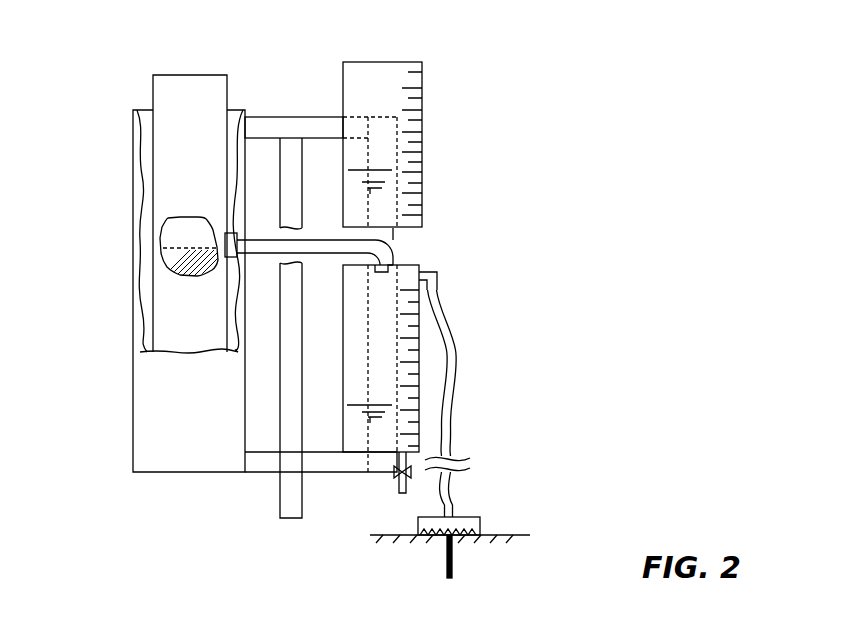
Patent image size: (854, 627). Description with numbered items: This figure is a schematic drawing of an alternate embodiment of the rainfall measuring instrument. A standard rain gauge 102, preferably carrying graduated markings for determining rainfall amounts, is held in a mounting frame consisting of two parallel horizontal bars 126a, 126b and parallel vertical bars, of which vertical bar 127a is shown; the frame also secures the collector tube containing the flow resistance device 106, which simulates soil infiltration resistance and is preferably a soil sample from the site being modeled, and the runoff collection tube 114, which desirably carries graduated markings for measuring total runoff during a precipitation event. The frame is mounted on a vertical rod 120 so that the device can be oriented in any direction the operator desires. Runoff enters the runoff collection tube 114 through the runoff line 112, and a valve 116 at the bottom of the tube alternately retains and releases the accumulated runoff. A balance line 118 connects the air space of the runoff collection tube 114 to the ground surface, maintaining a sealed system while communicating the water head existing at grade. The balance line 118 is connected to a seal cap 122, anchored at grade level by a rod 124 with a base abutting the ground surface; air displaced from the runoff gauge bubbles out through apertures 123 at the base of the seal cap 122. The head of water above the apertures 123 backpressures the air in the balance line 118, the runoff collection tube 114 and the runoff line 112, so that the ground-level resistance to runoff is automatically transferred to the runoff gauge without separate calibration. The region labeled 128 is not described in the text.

The standard rain gauge 102 is at (422, 68).
The flow resistance device 106 is at (168, 247).
The runoff line 112 is at (375, 243).
The runoff collection tube 114 is at (440, 347).
The valve 116 is at (400, 488).
The balance line 118 is at (458, 388).
The vertical rod 120 is at (290, 520).
The seal cap 122 is at (468, 513).
The apertures 123 is at (420, 535).
The rod 124 is at (452, 560).
The horizontal bar 126a is at (333, 115).
The horizontal bar 126b is at (272, 473).
The vertical bar 127a is at (395, 243).
The wall / frame 128 is at (140, 175).